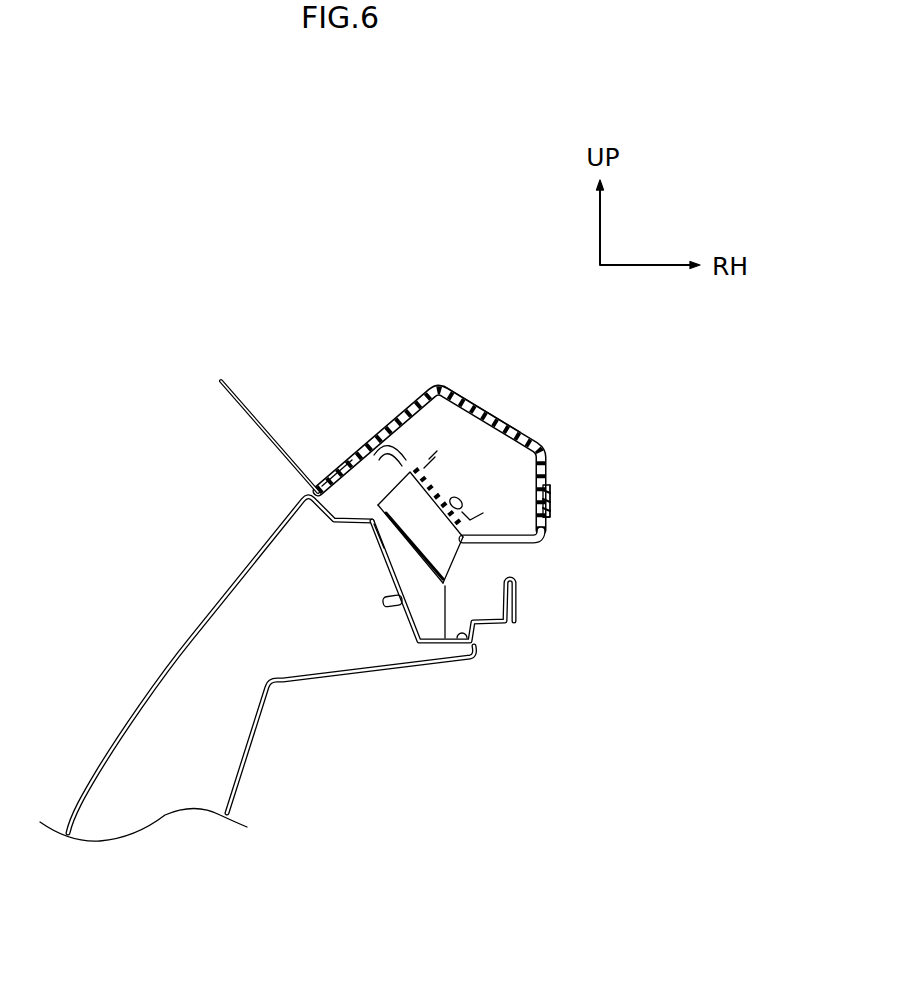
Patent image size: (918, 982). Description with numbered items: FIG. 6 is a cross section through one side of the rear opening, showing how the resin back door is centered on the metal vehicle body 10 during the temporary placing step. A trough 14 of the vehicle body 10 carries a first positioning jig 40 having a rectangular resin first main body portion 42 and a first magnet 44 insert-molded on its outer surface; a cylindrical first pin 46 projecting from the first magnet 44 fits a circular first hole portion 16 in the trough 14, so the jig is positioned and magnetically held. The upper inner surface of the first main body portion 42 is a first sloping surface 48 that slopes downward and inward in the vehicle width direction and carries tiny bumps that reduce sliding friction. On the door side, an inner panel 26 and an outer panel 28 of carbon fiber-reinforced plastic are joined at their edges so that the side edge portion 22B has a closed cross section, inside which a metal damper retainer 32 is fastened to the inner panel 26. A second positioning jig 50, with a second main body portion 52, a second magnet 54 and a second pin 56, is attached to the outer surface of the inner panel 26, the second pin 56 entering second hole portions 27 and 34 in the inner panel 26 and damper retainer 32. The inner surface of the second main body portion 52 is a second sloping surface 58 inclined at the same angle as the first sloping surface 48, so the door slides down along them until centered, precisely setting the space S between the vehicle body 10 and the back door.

The vehicle body 10 is at (178, 648).
The troughs 14 is at (457, 632).
The first hole portions 16 is at (402, 605).
The side edge portions 22B is at (443, 380).
The inner panels 26 is at (530, 547).
The second hole portion 27 is at (547, 517).
The outer panels 28 is at (468, 387).
The damper retainers 32 is at (463, 497).
The second hole portion 34 is at (467, 487).
The first positioning jigs 40 is at (458, 586).
The first main body portion 42 is at (430, 623).
The first magnet 44 is at (395, 572).
The first pin 46 is at (387, 600).
The first sloping surfaces 48 is at (470, 557).
The second positioning jigs 50 is at (386, 478).
The second main body portion 52 is at (353, 467).
The second magnet 54 is at (400, 460).
The second pin 56 is at (537, 507).
The second sloping surfaces 58 is at (378, 526).
The space S is at (214, 386).